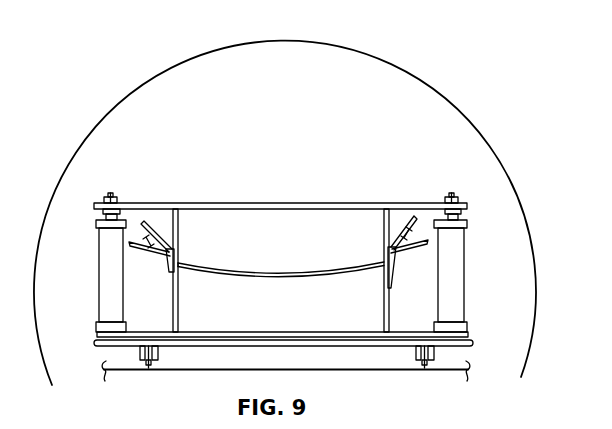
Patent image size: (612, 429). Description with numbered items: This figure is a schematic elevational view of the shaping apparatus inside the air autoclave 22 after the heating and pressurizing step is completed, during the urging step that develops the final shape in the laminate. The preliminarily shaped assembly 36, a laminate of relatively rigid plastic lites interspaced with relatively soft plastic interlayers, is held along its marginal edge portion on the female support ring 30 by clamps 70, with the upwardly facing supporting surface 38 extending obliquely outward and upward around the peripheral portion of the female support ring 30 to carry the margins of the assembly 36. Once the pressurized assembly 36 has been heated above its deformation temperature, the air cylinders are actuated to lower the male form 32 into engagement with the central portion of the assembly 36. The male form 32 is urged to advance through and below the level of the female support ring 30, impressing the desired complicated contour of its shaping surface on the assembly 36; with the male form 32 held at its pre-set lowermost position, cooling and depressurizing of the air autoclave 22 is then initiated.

The air autoclave 22 is at (513, 192).
The male form 32 is at (293, 248).
The supporting surface 38 is at (172, 212).
The clamps 70 is at (133, 251).
The female support ring 30 is at (177, 272).
The assembly 36 is at (265, 277).